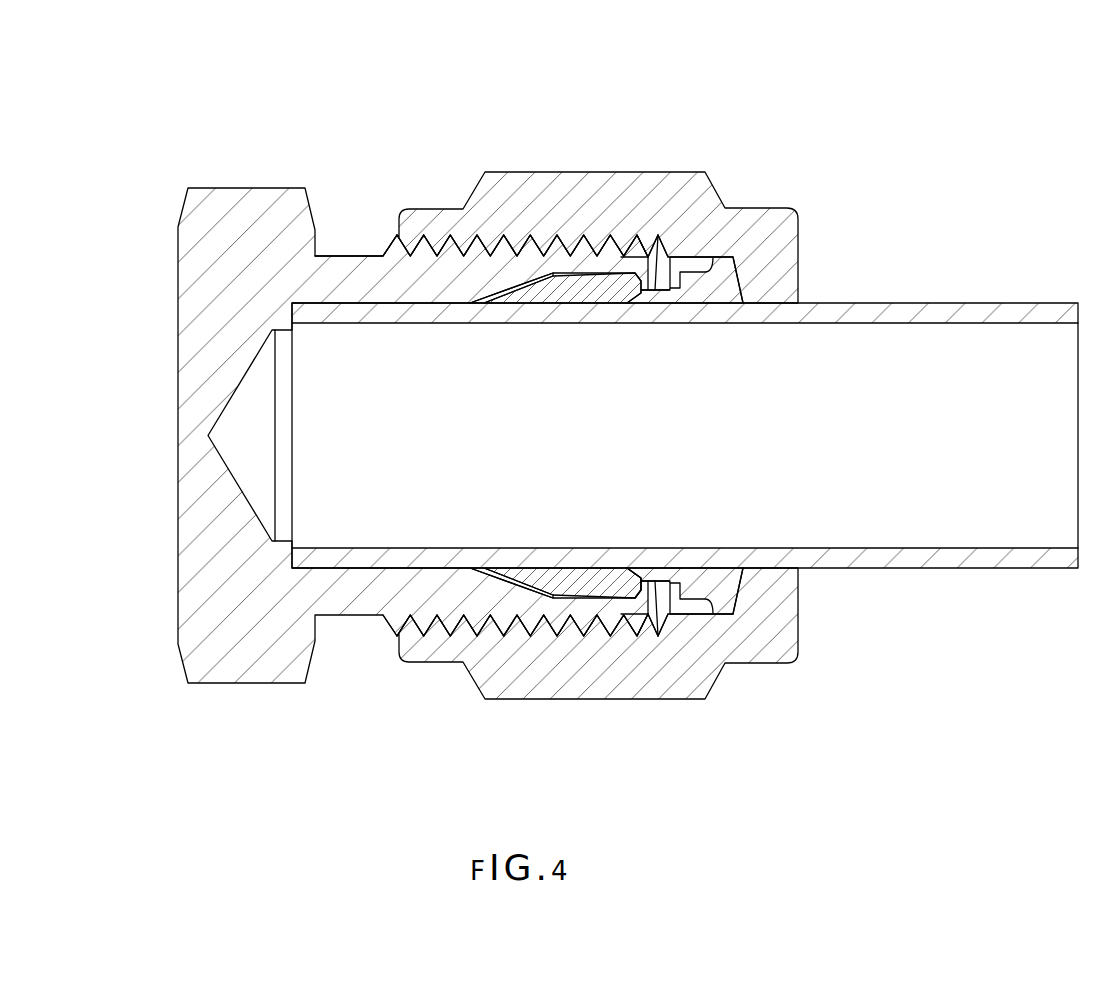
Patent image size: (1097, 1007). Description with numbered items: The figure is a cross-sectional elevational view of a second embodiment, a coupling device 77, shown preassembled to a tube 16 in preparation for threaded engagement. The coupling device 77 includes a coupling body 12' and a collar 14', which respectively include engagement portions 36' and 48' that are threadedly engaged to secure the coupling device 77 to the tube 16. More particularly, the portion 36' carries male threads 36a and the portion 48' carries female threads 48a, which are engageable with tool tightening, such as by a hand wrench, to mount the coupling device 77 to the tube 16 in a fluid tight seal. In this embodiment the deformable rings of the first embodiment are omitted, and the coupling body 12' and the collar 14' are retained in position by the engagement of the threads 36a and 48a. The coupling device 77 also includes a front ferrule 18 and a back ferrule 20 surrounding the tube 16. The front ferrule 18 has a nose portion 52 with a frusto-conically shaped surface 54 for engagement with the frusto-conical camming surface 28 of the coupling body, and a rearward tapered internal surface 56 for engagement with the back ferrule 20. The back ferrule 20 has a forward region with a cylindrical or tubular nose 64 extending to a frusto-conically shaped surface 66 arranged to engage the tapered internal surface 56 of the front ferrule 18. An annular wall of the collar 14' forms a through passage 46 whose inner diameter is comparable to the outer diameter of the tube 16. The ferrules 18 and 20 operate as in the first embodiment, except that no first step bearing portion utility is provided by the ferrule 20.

The coupling body 12' is at (394, 395).
The collar 14' is at (626, 426).
The tubular member 16 is at (978, 312).
The front ferrule 18 is at (583, 292).
The back ferrule 20 is at (710, 292).
The camming surface 28 is at (530, 590).
The engagement portion 36' is at (515, 182).
The male threads 36a is at (397, 232).
The through passage 46 is at (767, 568).
The engagement portion 48' is at (474, 681).
The female threads 48a is at (663, 250).
The nose portion 52 is at (528, 295).
The frusto-conically shaped surface 54 is at (525, 600).
The tapered internal surface 56 is at (625, 572).
The nose 64 is at (658, 295).
The frusto-conically shaped surface 66 is at (655, 578).
The coupling device 77 is at (855, 179).